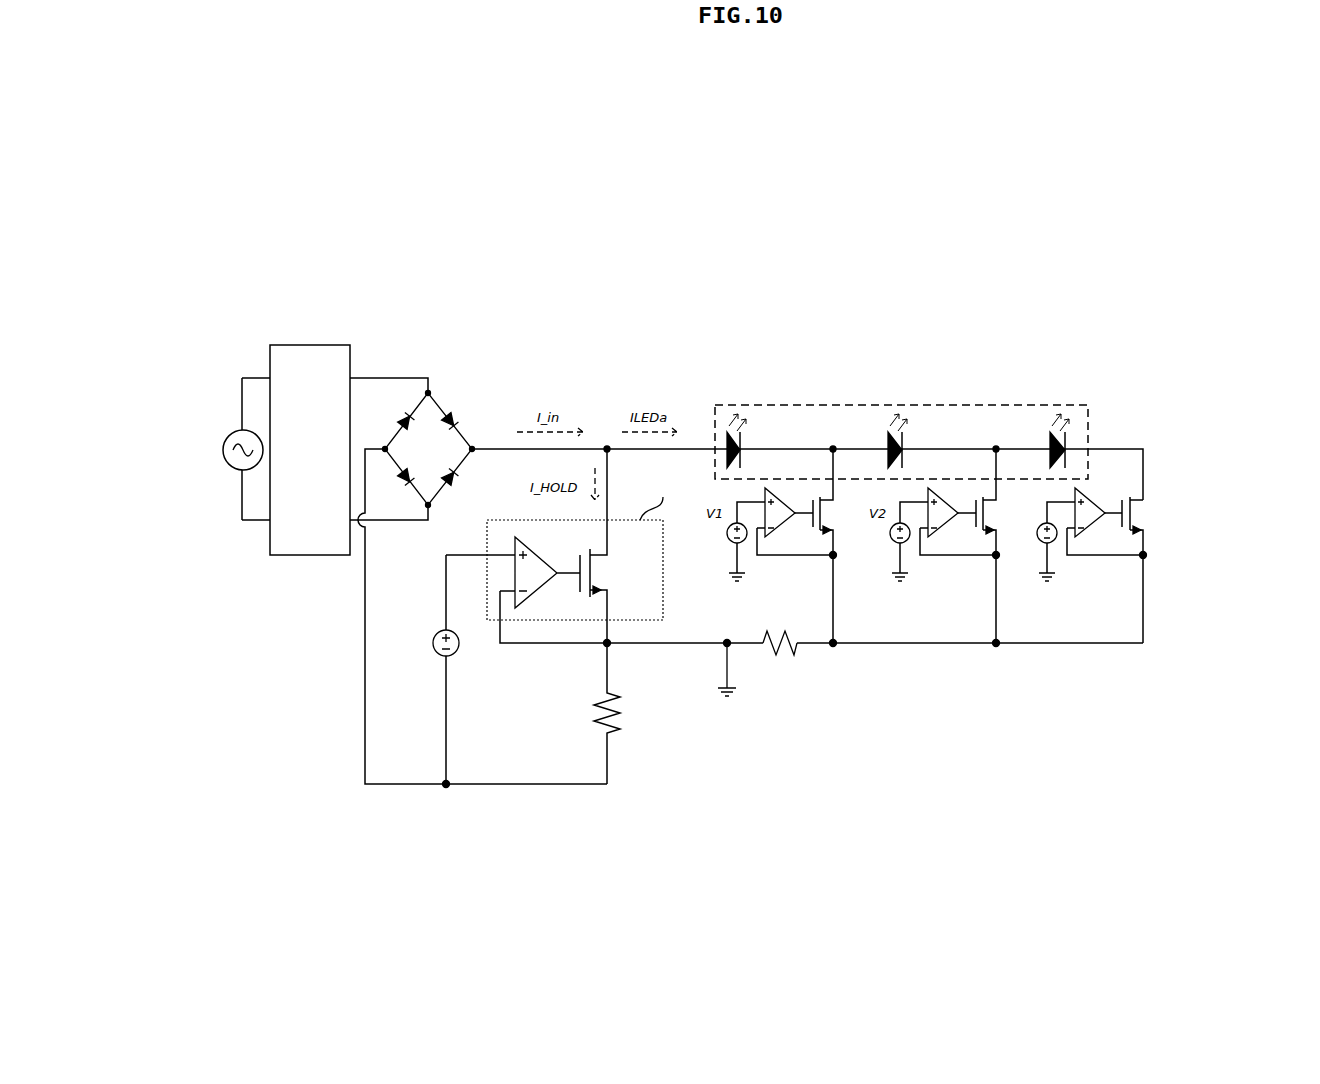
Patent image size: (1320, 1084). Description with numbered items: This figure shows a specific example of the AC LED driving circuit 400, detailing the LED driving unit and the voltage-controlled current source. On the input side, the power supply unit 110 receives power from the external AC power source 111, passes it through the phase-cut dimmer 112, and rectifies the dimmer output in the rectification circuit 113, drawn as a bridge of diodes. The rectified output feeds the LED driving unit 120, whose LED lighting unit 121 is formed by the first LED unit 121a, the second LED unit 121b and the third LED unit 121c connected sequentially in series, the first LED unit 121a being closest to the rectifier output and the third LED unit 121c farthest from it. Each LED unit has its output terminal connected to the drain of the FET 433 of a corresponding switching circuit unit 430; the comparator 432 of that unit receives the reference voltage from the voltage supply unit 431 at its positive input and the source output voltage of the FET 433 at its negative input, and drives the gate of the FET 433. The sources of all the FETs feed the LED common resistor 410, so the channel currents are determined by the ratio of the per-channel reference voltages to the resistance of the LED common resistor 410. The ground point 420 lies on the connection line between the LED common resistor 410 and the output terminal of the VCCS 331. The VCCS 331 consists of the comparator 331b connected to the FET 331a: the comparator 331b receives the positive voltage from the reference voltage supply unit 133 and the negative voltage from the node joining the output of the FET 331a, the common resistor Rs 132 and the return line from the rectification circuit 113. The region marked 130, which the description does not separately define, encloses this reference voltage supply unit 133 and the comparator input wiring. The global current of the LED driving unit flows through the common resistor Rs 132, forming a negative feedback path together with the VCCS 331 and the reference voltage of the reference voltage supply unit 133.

The LED lighting apparatus 400 is at (231, 157).
The power supply unit 110 is at (285, 306).
The AC power source 111 is at (222, 457).
The dimmer 112 is at (325, 345).
The rectification circuit 113 is at (432, 393).
The LED driving unit 120 is at (1158, 435).
The LED lighting unit 121 is at (848, 405).
The first LED unit 121a is at (747, 437).
The second LED unit 121b is at (909, 437).
The third LED unit 121c is at (1063, 437).
The holding current control unit 130 is at (432, 592).
The common resistor Rs 132 is at (608, 730).
The reference voltage supply unit 133 is at (437, 657).
The voltage-controlled current source (VCCS) 331 is at (663, 580).
The FET 331a is at (605, 555).
The comparator 331b is at (537, 592).
The LED common resistor 410 is at (793, 655).
The ground point 420 is at (723, 648).
The switching circuit unit 430 is at (937, 532).
The voltage supply unit 431 is at (1050, 545).
The comparator 432 is at (1092, 527).
The FET 433 is at (1143, 500).